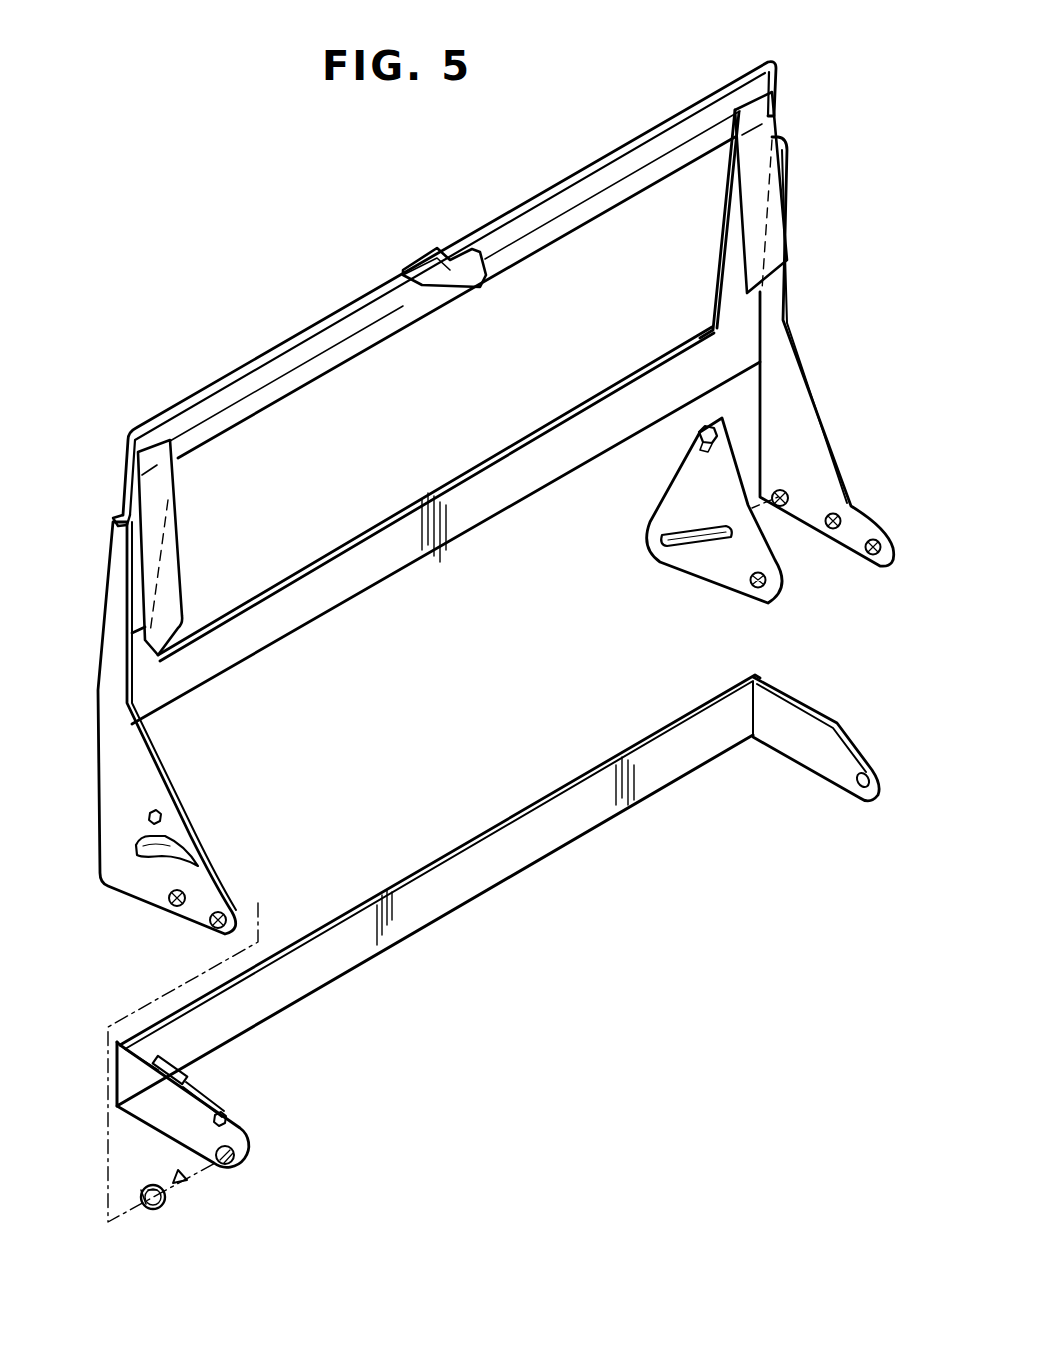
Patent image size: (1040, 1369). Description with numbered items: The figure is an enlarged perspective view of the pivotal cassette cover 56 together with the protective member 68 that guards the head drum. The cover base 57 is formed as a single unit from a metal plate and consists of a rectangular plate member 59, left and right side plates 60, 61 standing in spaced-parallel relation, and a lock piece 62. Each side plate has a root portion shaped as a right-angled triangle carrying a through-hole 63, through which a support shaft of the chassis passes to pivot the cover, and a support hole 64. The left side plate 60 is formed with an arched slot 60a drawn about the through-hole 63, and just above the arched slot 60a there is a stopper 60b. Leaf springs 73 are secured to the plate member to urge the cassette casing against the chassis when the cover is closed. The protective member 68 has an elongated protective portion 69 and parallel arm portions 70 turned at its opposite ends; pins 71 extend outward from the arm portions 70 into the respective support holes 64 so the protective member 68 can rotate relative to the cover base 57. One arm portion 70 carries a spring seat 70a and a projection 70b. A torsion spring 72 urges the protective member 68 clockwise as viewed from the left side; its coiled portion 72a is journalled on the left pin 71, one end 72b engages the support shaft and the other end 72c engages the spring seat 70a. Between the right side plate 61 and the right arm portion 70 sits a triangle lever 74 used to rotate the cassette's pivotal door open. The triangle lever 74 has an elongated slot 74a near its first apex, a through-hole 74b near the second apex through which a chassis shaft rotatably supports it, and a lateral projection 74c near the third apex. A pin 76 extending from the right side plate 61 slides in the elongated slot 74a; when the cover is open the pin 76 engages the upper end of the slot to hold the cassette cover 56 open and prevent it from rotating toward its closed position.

The pivotal cassette cover 56 is at (124, 470).
The cover base 57 is at (245, 362).
The rectangular plate member 59 is at (398, 566).
The left side plate 60 is at (125, 892).
The arched slot 60a is at (180, 835).
The stopper 60b is at (157, 818).
The right side plate 61 is at (797, 392).
The lock piece 62 is at (477, 260).
The through-hole 63 is at (833, 530).
The support hole 64 is at (873, 556).
The protective member 68 is at (432, 845).
The elongated protective portion 69 is at (495, 876).
The arm portion 70 is at (802, 757).
The spring seat 70a is at (228, 1115).
The projection 70b is at (195, 1042).
The pin 71 is at (860, 792).
The torsion spring 72 is at (153, 1212).
The coiled portion 72a is at (152, 1188).
The one end 72b is at (132, 1172).
The other end 72c is at (178, 1178).
The leaf spring 73 is at (172, 608).
The triangle lever 74 is at (708, 556).
The elongated slot 74a is at (650, 522).
The through-hole 74b is at (757, 590).
The lateral projection 74c is at (700, 445).
The pin 76 is at (780, 490).